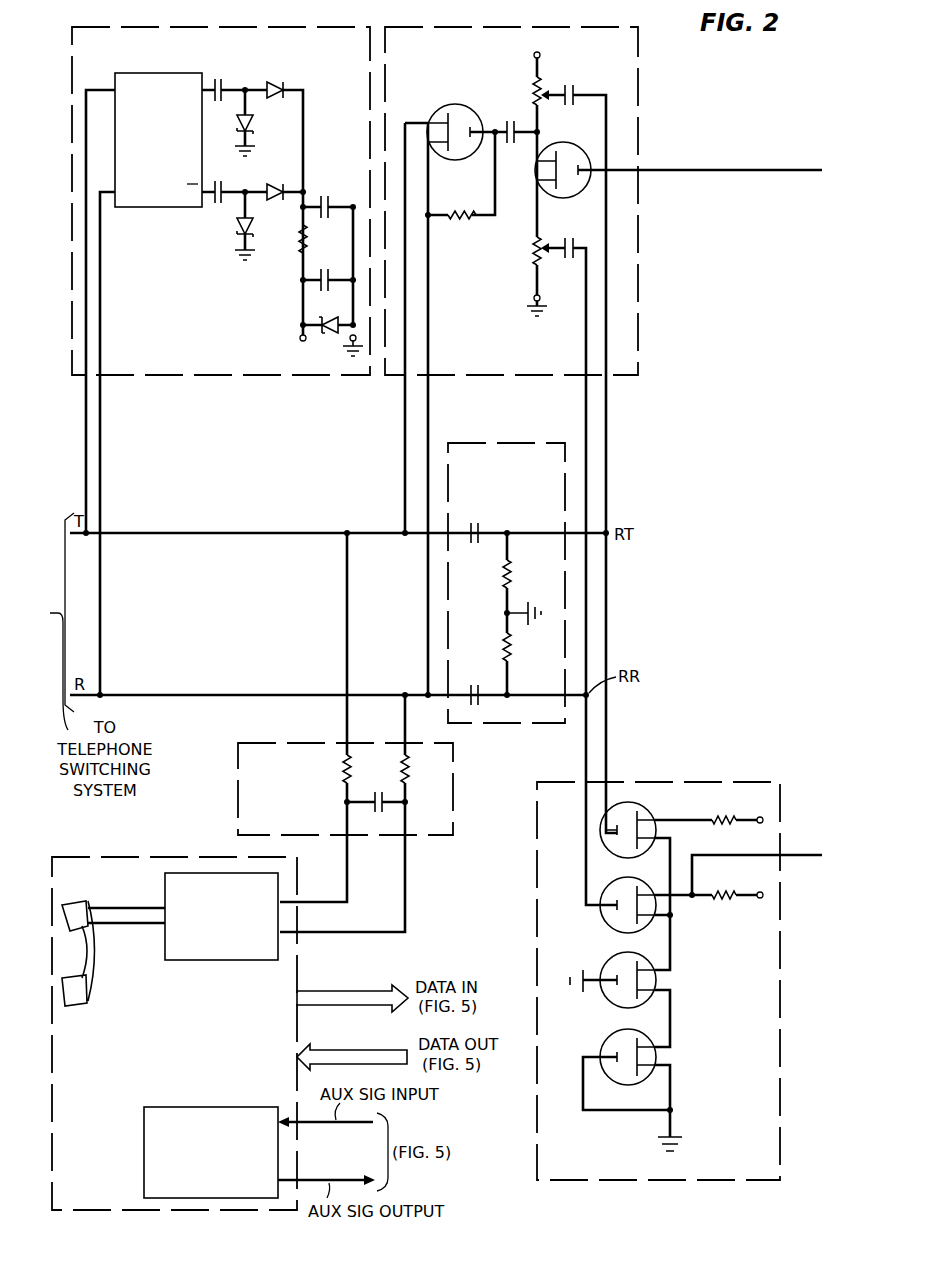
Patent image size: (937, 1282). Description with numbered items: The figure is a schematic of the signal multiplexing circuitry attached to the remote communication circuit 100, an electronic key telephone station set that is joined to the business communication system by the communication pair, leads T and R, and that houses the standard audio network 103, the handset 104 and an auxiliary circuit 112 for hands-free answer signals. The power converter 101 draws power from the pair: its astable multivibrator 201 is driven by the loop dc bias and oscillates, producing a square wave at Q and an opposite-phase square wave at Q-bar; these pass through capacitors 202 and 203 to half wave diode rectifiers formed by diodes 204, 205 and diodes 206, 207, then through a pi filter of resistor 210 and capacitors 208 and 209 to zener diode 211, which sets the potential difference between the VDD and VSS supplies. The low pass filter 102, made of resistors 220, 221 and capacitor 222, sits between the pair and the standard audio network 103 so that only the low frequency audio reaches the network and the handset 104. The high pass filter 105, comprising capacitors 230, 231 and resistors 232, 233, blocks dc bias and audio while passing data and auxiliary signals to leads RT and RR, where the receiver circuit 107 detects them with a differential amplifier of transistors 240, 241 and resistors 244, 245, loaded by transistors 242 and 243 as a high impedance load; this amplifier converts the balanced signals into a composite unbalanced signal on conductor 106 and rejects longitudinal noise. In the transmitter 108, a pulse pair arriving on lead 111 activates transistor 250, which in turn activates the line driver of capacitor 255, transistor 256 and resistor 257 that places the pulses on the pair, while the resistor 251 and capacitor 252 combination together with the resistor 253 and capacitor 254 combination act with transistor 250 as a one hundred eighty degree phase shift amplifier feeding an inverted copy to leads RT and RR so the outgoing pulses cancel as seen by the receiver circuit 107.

The remote communication circuit 100 is at (125, 855).
The power converter 101 is at (221, 361).
The low pass filter 102 is at (455, 750).
The standard audio network 103 is at (165, 878).
The handset 104 is at (94, 980).
The high pass filter 105 is at (506, 583).
The conductor 106 is at (712, 853).
The receiver circuit 107 is at (679, 981).
The transmitter 108 is at (603, 466).
The lead 111 is at (730, 168).
The auxiliary circuit 112 is at (144, 1150).
The astable multivibrator 201 is at (160, 72).
The capacitor 202 is at (217, 76).
The capacitor 203 is at (217, 204).
The diode 204 is at (251, 124).
The diode 205 is at (278, 80).
The diode 206 is at (240, 238).
The diode 207 is at (280, 182).
The capacitor 208 is at (331, 194).
The capacitor 209 is at (331, 268).
The resistor 210 is at (300, 233).
The zener diode 211 is at (321, 322).
The resistor 220 is at (351, 768).
The resistor 221 is at (411, 765).
The capacitor 222 is at (377, 815).
The capacitor 230 is at (472, 524).
The capacitor 231 is at (473, 684).
The resistor 232 is at (513, 572).
The resistor 233 is at (513, 655).
The transistor 240 is at (637, 806).
The transistor 241 is at (618, 880).
The transistor 242 is at (612, 955).
The transistor 243 is at (612, 1034).
The resistor 244 is at (728, 817).
The resistor 245 is at (724, 893).
The transistor 250 is at (584, 146).
The resistor 251 is at (545, 80).
The capacitor 252 is at (578, 86).
The resistor 253 is at (529, 246).
The capacitor 254 is at (573, 237).
The capacitor 255 is at (509, 120).
The transistor 256 is at (446, 106).
The resistor 257 is at (461, 206).